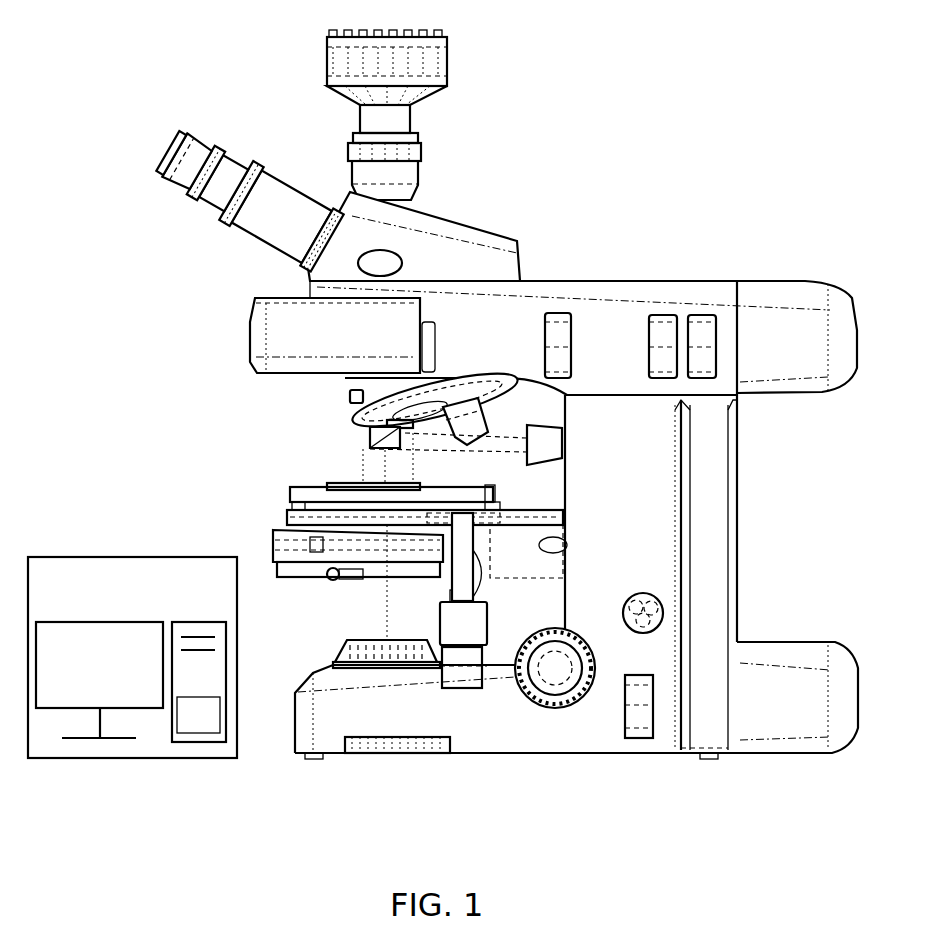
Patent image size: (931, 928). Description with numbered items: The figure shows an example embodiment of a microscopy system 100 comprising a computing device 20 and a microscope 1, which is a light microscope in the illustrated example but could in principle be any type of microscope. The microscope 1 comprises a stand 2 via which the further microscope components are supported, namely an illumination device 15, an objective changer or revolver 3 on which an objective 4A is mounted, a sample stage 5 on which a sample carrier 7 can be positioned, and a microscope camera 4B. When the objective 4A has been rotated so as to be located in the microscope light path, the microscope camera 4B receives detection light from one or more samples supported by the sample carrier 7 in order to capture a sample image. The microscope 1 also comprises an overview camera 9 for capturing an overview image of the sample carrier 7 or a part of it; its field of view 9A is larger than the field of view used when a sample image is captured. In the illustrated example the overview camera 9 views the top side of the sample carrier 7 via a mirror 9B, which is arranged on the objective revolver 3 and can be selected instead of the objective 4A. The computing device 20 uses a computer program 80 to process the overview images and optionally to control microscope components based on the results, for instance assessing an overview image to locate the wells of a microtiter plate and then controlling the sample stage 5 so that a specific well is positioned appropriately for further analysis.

The microscopy system 100 is at (626, 76).
The microscope 1 is at (722, 243).
The stand 2 is at (720, 504).
The objective changer/revolver 3 is at (347, 400).
The objective 4A is at (485, 410).
The microscope camera 4B is at (434, 57).
The sample stage 5 is at (312, 510).
The sample carrier 7 is at (327, 490).
The overview camera 9 is at (549, 456).
The field of view 9A is at (370, 466).
The mirror 9B is at (363, 442).
The illumination device 15 is at (343, 709).
The computing device 20 is at (146, 611).
The computer program 80 is at (212, 727).